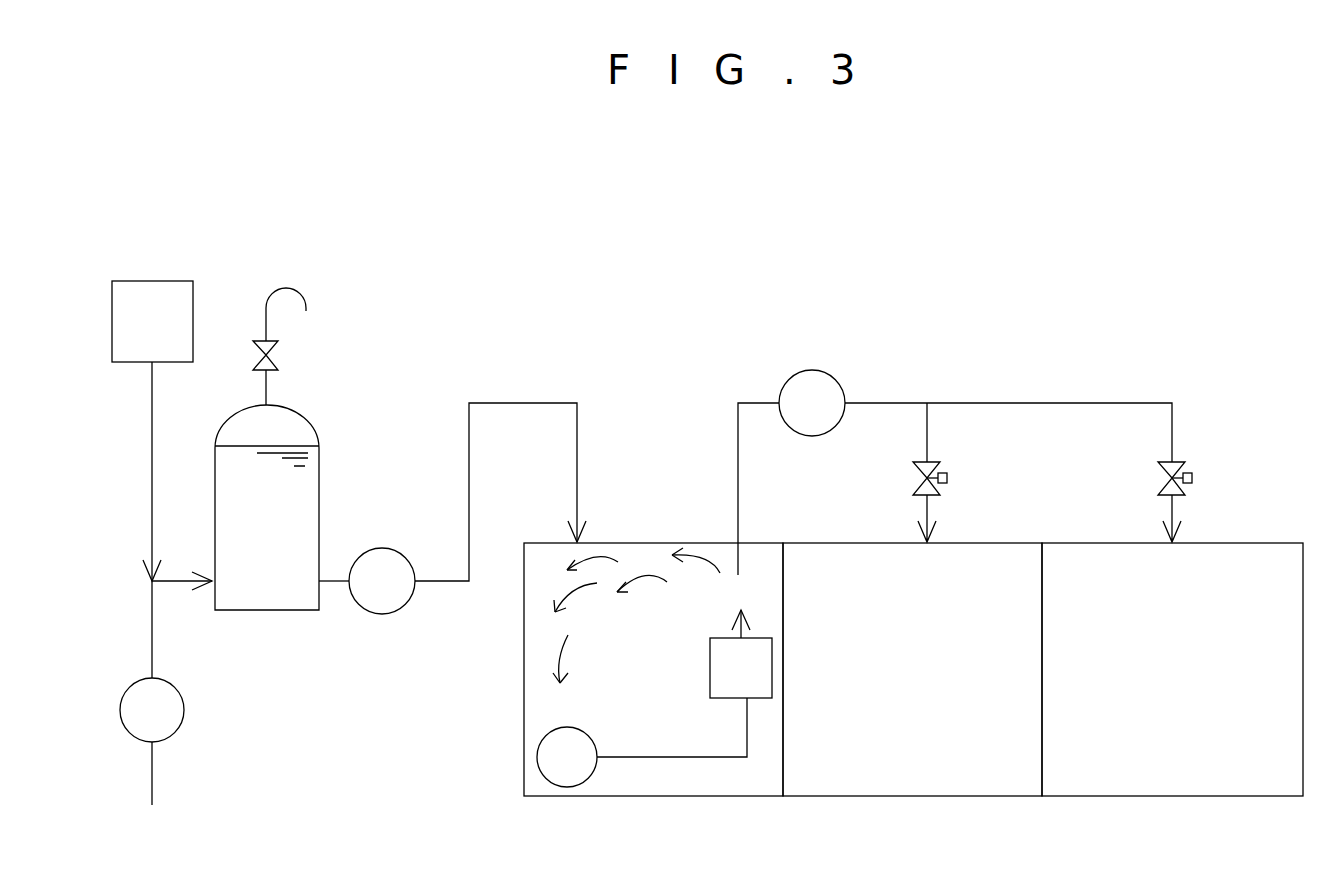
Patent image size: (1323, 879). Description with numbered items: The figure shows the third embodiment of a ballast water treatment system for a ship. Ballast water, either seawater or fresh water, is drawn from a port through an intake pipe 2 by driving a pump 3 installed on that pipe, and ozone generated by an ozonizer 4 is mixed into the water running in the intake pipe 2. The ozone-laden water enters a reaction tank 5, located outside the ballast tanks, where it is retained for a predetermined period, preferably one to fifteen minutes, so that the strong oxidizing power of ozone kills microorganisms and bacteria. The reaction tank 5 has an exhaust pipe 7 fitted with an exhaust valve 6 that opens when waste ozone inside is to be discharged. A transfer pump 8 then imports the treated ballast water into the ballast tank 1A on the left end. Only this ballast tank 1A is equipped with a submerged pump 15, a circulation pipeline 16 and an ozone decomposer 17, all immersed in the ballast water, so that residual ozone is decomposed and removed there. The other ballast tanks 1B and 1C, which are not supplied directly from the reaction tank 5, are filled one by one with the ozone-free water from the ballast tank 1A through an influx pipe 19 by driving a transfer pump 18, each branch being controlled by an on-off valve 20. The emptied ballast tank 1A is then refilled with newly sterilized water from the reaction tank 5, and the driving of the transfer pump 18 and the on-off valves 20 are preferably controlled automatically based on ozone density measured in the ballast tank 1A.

The ballast tank 1A is at (657, 798).
The ballast tank 1B is at (904, 798).
The ballast tank 1C is at (1174, 798).
The intake pipe 2 is at (152, 618).
The pump 3 is at (120, 706).
The ozonizer 4 is at (112, 306).
The reaction tank 5 is at (320, 428).
The exhaust valve 6 is at (280, 357).
The exhaust pipe 7 is at (283, 287).
The transfer pump 8 is at (381, 615).
The submerged pump 15 is at (582, 729).
The circulation pipeline 16 is at (666, 757).
The ozone decomposer 17 is at (710, 654).
The transfer pump 18 is at (814, 370).
The influx pipe 19 is at (1046, 403).
The on-off valve 20 is at (950, 477).